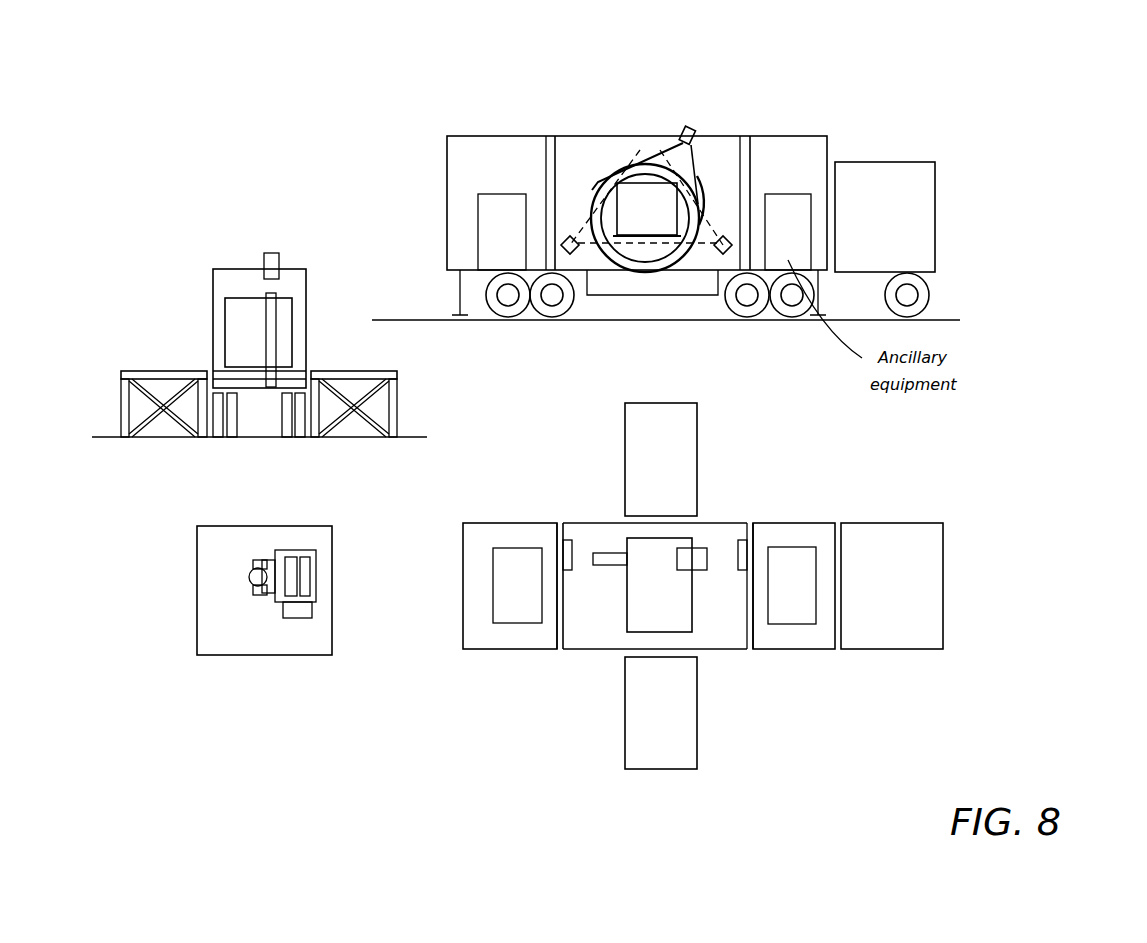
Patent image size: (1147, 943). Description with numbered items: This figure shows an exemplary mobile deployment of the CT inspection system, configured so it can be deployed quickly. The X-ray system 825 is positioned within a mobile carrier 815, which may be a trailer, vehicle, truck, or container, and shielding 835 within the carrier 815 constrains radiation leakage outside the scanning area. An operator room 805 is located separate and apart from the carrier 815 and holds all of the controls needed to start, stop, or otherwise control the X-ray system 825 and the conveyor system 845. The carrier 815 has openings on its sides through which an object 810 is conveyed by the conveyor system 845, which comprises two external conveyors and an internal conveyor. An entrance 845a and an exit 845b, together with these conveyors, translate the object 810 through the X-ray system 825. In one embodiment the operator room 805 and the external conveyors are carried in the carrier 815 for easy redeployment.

The operator room 805 is at (220, 643).
The object 810 is at (638, 227).
The carrier 815 is at (465, 142).
The X-ray system 825 is at (645, 170).
The shielding 835 is at (790, 713).
The conveyor system 845 is at (691, 463).
The entrance 845a is at (137, 375).
The exit 845b is at (392, 373).